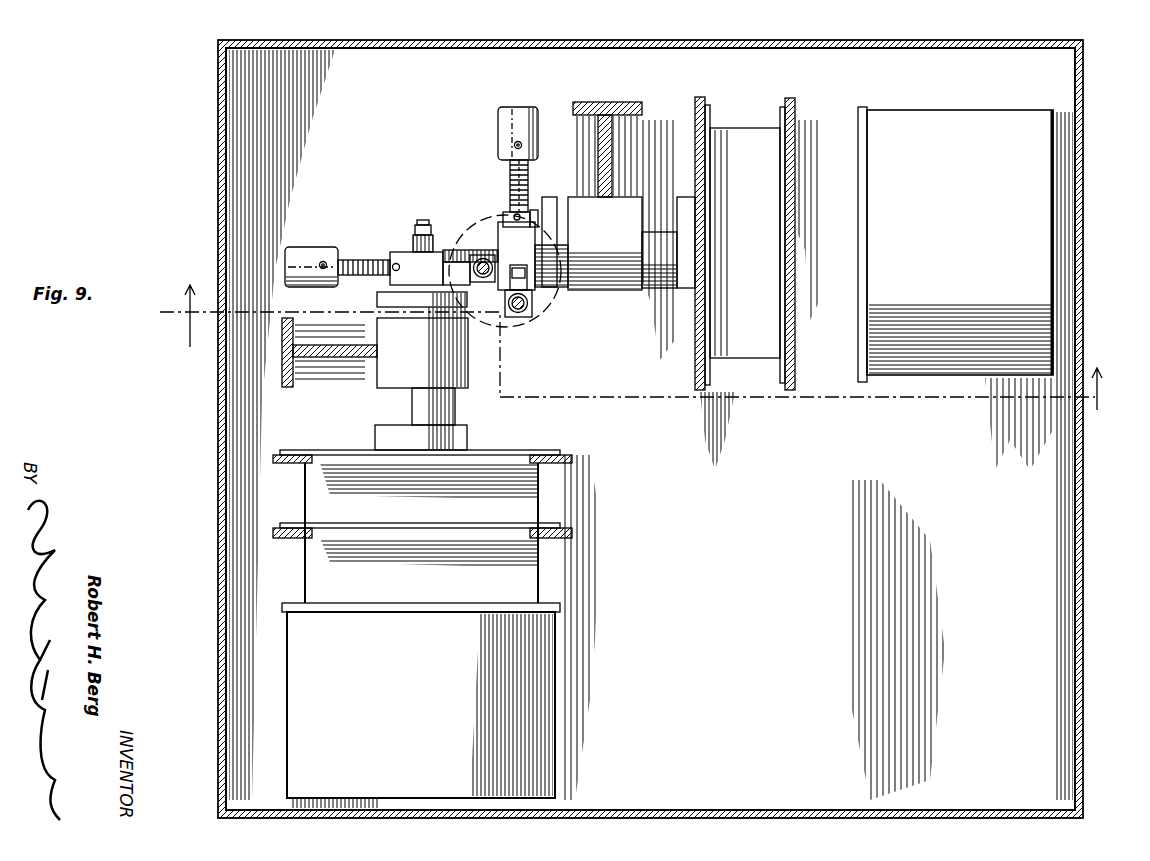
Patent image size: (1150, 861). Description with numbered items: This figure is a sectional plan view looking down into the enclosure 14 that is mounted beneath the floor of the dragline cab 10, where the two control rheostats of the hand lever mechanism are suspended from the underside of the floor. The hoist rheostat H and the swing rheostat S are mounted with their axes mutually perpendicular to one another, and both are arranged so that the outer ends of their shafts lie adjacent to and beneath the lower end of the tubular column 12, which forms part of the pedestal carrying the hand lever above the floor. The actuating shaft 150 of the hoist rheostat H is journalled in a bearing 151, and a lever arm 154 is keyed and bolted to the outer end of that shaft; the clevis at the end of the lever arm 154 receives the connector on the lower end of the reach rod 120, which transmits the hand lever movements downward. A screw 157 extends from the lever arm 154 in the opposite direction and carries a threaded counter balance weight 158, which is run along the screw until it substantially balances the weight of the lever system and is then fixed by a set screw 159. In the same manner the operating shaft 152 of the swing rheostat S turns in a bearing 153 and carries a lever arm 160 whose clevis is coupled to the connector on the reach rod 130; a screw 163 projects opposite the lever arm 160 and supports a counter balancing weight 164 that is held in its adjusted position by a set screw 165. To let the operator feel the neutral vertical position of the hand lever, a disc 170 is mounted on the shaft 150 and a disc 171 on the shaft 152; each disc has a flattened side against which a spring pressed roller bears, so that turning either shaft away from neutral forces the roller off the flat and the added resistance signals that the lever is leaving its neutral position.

The enclosure 14 is at (218, 132).
The tubular column 12 is at (543, 322).
The reach rod 120 is at (532, 308).
The reach rod 130 is at (490, 282).
The actuating shaft 150 is at (650, 275).
The bearing 151 is at (594, 290).
The operating shaft 152 is at (432, 405).
The bearing 153 is at (468, 358).
The lever arm 154 is at (503, 222).
The screw 157 is at (510, 178).
The counter balance weight 158 is at (498, 118).
The set screw 159 is at (514, 146).
The lever arm 160 is at (440, 250).
The screw 163 is at (362, 262).
The counter balancing weight 164 is at (305, 247).
The set screw 165 is at (325, 262).
The disc 170 is at (550, 197).
The disc 171 is at (377, 298).
The dragline cab 10 is at (644, 352).
The swing rheostat S is at (550, 563).
The hoist rheostat H is at (942, 388).